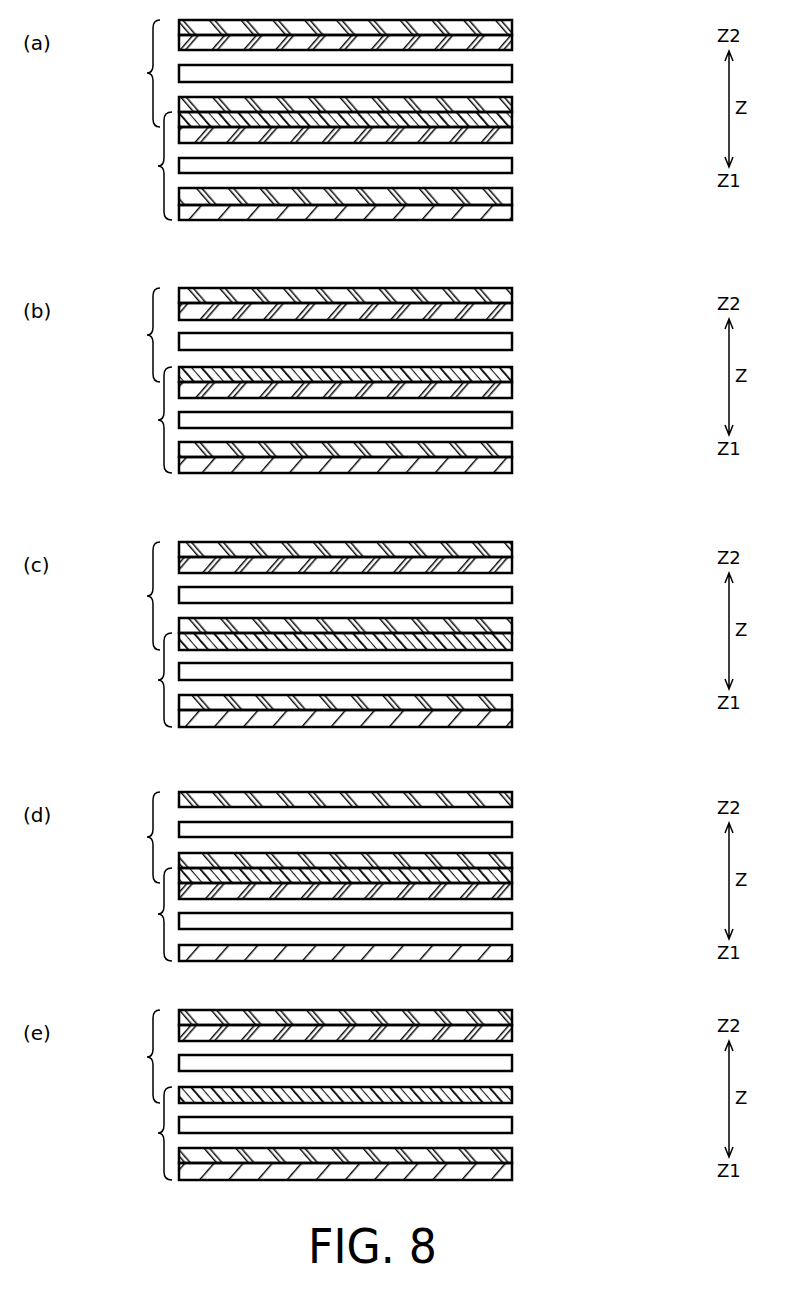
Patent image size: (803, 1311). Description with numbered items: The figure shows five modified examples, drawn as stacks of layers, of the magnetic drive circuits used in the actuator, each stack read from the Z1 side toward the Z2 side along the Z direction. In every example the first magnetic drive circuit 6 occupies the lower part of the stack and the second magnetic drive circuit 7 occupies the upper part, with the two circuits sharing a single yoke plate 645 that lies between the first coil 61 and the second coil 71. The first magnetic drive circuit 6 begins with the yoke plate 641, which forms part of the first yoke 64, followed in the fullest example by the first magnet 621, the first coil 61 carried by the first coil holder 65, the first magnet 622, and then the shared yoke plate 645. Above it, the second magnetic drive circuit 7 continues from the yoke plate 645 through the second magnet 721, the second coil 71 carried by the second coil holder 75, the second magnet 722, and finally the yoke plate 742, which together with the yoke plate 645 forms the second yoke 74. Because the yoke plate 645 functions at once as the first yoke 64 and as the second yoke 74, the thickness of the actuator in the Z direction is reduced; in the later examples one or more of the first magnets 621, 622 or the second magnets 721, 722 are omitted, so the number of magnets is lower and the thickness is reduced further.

The first magnetic drive circuit 6 is at (159, 646).
The second magnetic drive circuit 7 is at (146, 561).
The first coil 61 is at (512, 1125).
The first coil holder 65 is at (388, 648).
The first magnet 621 is at (512, 1155).
The first magnet 622 is at (512, 891).
The yoke plate 641 is at (512, 1171).
The yoke plate 645 is at (512, 1095).
The first yoke 64 is at (408, 648).
The second coil 71 is at (512, 1063).
The second coil holder 75 is at (388, 563).
The second magnet 721 is at (512, 860).
The second magnet 722 is at (512, 1033).
The yoke plate 742 is at (512, 1017).
The second yoke 74 is at (394, 515).